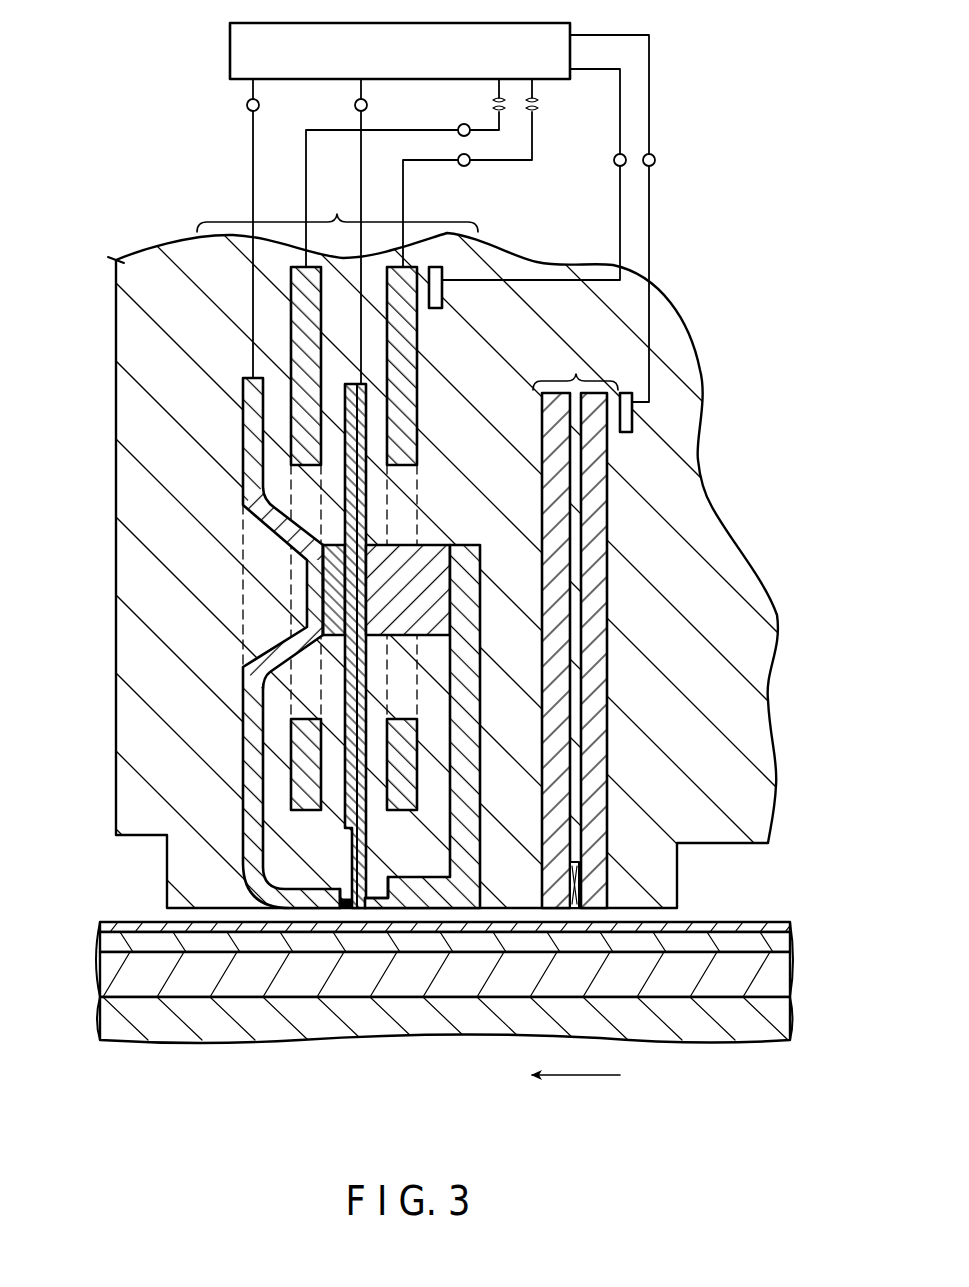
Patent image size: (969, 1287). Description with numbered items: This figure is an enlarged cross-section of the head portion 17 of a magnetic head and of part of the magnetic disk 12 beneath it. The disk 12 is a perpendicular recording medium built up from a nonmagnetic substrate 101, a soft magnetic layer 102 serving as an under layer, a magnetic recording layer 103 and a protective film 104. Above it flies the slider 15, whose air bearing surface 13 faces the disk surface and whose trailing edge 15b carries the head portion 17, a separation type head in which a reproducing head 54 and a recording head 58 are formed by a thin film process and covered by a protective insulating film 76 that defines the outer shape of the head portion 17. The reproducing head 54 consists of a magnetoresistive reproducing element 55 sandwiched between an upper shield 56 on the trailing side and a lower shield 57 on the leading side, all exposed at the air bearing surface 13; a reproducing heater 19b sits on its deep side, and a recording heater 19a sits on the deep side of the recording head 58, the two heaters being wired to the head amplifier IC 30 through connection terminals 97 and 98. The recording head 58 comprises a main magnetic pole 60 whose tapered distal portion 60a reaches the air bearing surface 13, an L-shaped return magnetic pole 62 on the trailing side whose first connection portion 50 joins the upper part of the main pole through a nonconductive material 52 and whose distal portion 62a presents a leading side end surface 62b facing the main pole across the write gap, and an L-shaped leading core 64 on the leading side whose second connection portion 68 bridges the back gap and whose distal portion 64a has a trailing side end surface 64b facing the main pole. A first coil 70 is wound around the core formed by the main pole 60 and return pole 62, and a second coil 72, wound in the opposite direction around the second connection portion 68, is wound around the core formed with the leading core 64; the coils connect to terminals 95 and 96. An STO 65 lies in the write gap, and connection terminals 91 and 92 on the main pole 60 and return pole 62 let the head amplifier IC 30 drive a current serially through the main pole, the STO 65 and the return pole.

The head amplifier IC 30 is at (230, 50).
The connection terminal 92 is at (247, 105).
The connection terminal 91 is at (355, 105).
The terminal 95 is at (458, 127).
The terminal 96 is at (468, 166).
The connection terminal 97 is at (614, 160).
The connection terminal 98 is at (655, 160).
The recording head 58 is at (337, 209).
The protective insulating film 76 is at (138, 266).
The head portion 17 is at (588, 266).
The slider 15 is at (685, 372).
The trailing edge 15b is at (116, 490).
The first coil 70 is at (298, 312).
The second coil 72 is at (410, 343).
The recording heater 19a is at (443, 288).
The reproducing heater 19b is at (627, 432).
The reproducing head 54 is at (575, 364).
The lower shield 57 is at (571, 540).
The upper shield 56 is at (608, 585).
The reproducing element 55 is at (581, 872).
The second connection portion 68 is at (428, 547).
The nonconductive material 52 is at (322, 563).
The first connection portion 50 is at (318, 590).
The leading core 64 is at (482, 650).
The trailing side end surface 64b is at (390, 896).
The distal portion 64a is at (445, 905).
The return magnetic pole 62 is at (238, 687).
The leading side end surface 62b is at (345, 896).
The distal portion 62a is at (290, 902).
The main magnetic pole 60 is at (366, 818).
The distal portion 60a is at (360, 905).
The STO 65 is at (346, 908).
The air bearing surface 13 is at (706, 846).
The magnetic disk 12 is at (407, 1015).
The protective film 104 is at (100, 925).
The magnetic recording layer 103 is at (100, 942).
The soft magnetic layer 102 is at (100, 975).
The substrate 101 is at (102, 1022).